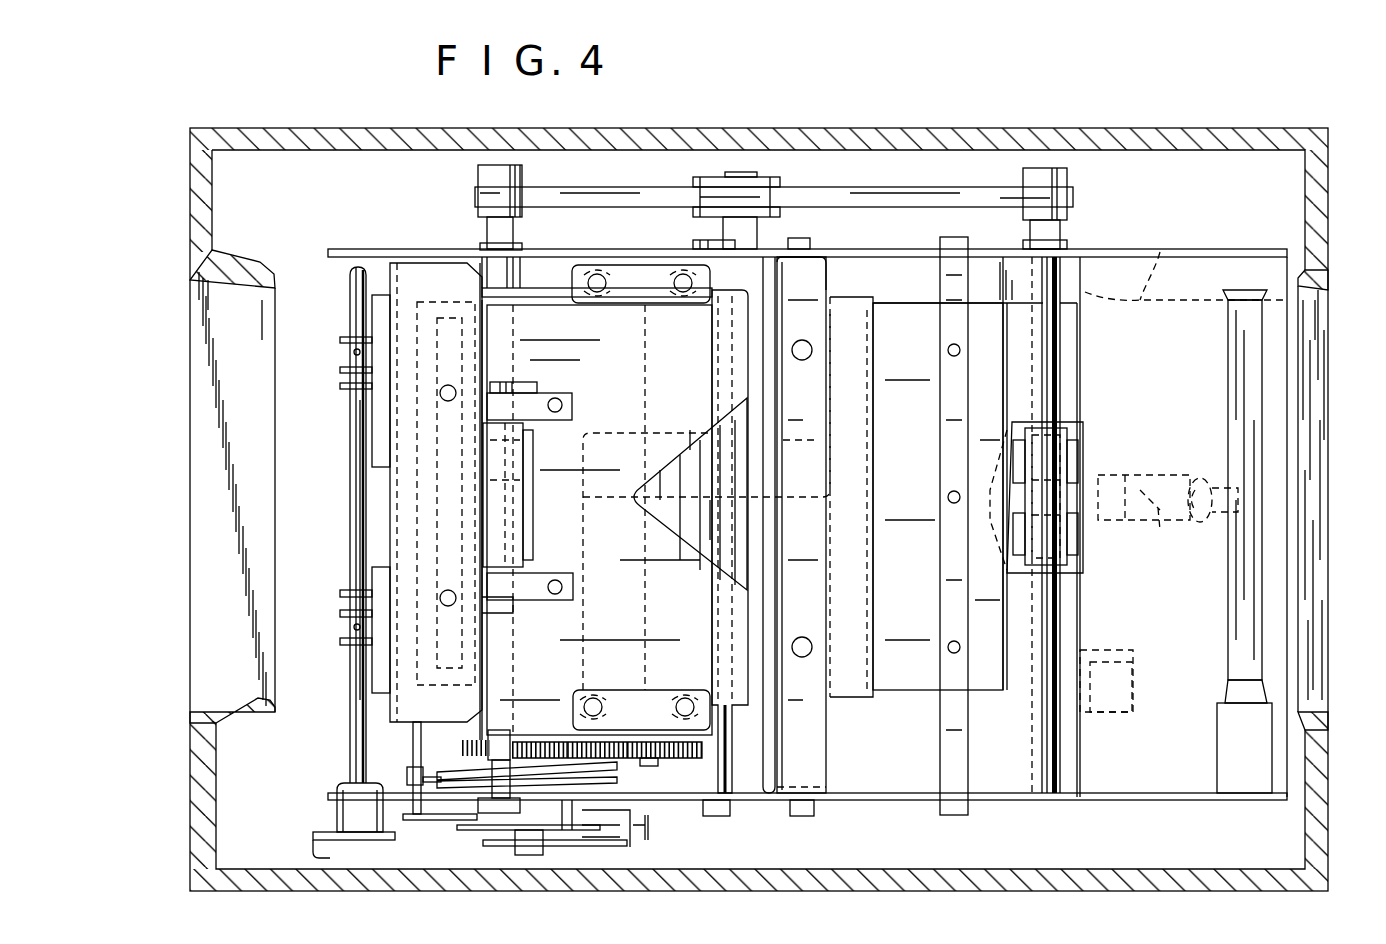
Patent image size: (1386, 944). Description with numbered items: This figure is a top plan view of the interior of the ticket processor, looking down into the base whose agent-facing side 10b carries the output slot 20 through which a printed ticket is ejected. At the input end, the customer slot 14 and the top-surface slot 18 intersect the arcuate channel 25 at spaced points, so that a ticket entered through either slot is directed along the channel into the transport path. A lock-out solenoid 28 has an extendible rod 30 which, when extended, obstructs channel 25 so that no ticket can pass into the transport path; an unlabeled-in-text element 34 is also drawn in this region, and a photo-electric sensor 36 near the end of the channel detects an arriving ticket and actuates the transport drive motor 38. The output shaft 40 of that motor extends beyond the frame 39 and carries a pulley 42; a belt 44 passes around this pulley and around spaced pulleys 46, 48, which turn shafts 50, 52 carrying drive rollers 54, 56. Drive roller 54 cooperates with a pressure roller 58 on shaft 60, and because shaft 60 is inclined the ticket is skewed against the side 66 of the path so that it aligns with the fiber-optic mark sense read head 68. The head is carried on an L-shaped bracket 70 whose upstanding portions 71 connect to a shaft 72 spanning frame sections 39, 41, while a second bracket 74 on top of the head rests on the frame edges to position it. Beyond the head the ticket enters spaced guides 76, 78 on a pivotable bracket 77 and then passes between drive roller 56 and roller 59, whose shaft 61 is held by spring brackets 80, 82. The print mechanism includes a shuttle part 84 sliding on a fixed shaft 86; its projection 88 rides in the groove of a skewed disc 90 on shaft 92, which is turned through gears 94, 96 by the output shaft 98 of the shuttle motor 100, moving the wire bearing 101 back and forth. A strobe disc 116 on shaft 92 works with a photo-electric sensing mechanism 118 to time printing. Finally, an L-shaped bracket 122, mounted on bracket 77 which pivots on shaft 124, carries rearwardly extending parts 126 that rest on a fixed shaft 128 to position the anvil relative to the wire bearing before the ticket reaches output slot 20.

The agent side of base portion 10b is at (190, 182).
The ticket input slot 14 is at (1313, 318).
The ticket input slot 18 is at (1238, 322).
The output slot 20 is at (204, 318).
The arcuate channel 25 is at (1162, 224).
The ticket lock-out solenoid 28 is at (1158, 534).
The extendible rod 30 is at (1220, 532).
The support block 34 is at (1252, 755).
The third ticket sensor 36 is at (1136, 650).
The transport drive motor 38 is at (641, 300).
The frame 39 is at (1128, 250).
The output shaft 40 is at (748, 232).
The frame section 41 is at (860, 801).
The pulley 42 is at (713, 185).
The belt 44 is at (985, 187).
The pulley 46 is at (1042, 168).
The pulley 48 is at (487, 175).
The shaft 50 is at (1046, 226).
The shaft 52 is at (490, 228).
The drive roller 54 is at (1072, 466).
The drive roller 56 is at (555, 452).
The pressure roller 58 is at (1048, 450).
The pressure roller 59 is at (505, 522).
The shaft 60 is at (1046, 386).
The shaft 61 is at (500, 382).
The side of transport path 66 is at (913, 306).
The fiber-optic mark sense read head 68 is at (938, 496).
The L-shaped bracket 70 is at (845, 300).
The upstanding portions of bracket 71 is at (833, 270).
The shaft 72 is at (828, 268).
The second bracket 74 is at (942, 448).
The guide 76 is at (737, 368).
The pivotable bracket 77 is at (750, 298).
The guide 78 is at (737, 528).
The spring bracket 80 is at (528, 405).
The spring bracket 82 is at (583, 538).
The shuttle part 84 is at (407, 703).
The fixedly mounted shaft 86 is at (358, 688).
The projection 88 is at (437, 778).
The disc 90 is at (648, 766).
The shaft 92 is at (530, 856).
The gear 94 is at (567, 678).
The gear 96 is at (697, 752).
The output shaft 98 is at (617, 767).
The shuttle motor 100 is at (613, 501).
The wire bearing 101 is at (416, 452).
The strobe disc 116 is at (462, 830).
The photo-electric sensing mechanism 118 is at (612, 846).
The L-shaped bracket 122 is at (388, 528).
The shaft 124 is at (697, 243).
The rearwardly extending parts 126 is at (340, 340).
The fixed shaft 128 is at (357, 556).